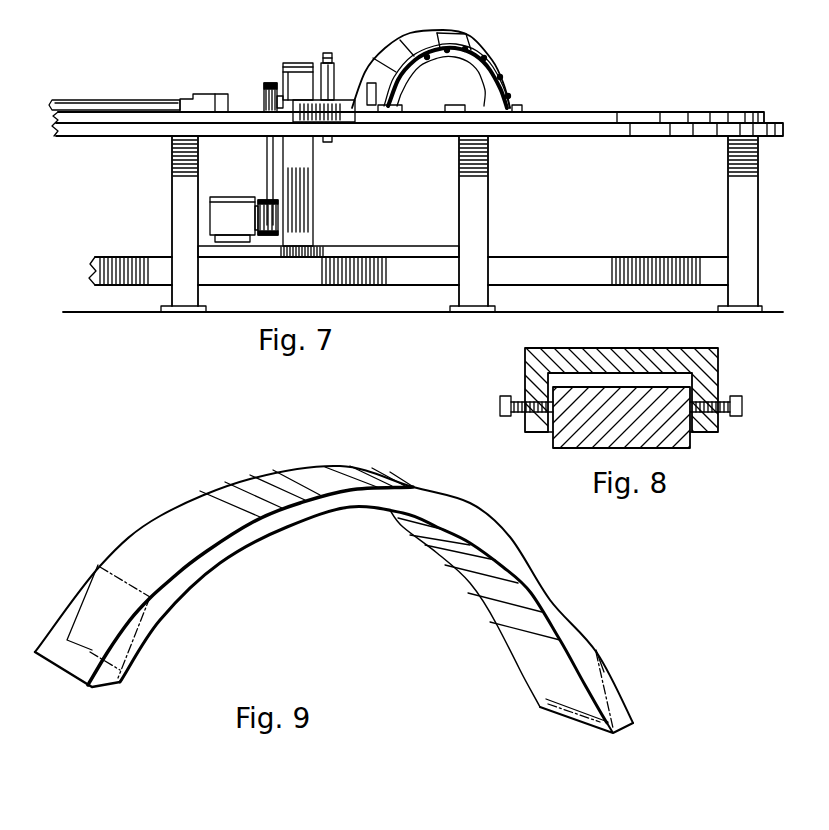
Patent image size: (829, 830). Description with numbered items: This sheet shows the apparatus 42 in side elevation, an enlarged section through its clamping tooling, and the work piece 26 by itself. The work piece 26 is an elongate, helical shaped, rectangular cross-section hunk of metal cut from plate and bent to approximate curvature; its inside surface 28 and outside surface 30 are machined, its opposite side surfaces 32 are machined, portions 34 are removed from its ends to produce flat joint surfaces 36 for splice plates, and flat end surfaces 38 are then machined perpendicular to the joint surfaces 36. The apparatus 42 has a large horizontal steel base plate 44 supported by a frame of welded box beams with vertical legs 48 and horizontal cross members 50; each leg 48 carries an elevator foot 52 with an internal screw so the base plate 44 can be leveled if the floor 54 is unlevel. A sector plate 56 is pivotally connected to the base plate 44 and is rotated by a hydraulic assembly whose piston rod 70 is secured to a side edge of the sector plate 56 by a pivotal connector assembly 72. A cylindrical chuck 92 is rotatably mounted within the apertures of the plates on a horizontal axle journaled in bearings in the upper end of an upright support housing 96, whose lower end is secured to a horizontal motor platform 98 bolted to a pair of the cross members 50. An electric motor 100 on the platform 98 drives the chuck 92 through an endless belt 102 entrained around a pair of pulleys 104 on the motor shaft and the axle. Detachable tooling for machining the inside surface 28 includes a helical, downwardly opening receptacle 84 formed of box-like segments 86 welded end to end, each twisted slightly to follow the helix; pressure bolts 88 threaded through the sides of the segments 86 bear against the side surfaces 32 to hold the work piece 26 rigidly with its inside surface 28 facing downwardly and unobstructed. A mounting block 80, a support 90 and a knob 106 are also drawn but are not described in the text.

In FIG. 7, the work piece 26 is at (460, 60).
In FIG. 8, the work piece 26 is at (610, 397).
In FIG. 9, the work piece 26 is at (161, 523).
In FIG. 7, the inside surface 28 is at (488, 95).
In FIG. 8, the inside surface 28 is at (577, 448).
In FIG. 9, the inside surface 28 is at (475, 573).
In FIG. 9, the outside surface 30 is at (275, 478).
In FIG. 8, the side surfaces 32 is at (548, 437).
In FIG. 9, the side surfaces 32 is at (513, 550).
In FIG. 9, the portions 34 is at (70, 673).
In FIG. 9, the joint surfaces 36 is at (80, 610).
In FIG. 9, the end surfaces 38 is at (120, 674).
In FIG. 7, the apparatus 42 is at (699, 108).
In FIG. 7, the base plate 44 is at (687, 132).
In FIG. 7, the legs 48 is at (477, 219).
In FIG. 7, the cross members 50 is at (337, 275).
In FIG. 7, the elevator foot 52 is at (182, 305).
In FIG. 7, the floor 54 is at (557, 313).
In FIG. 7, the sector plate 56 is at (623, 117).
In FIG. 7, the piston rod 70 is at (117, 102).
In FIG. 7, the pivotal connector assembly 72 is at (207, 92).
In FIG. 7, the mounting block 80 is at (333, 118).
In FIG. 7, the receptacle 84 is at (481, 40).
In FIG. 7, the box-like segments 86 is at (426, 35).
In FIG. 8, the box-like segments 86 is at (523, 357).
In FIG. 7, the pressure bolts 88 is at (503, 78).
In FIG. 8, the pressure bolts 88 is at (500, 402).
In FIG. 7, the support 90 is at (392, 107).
In FIG. 7, the chuck 92 is at (333, 63).
In FIG. 7, the support housing 96 is at (285, 65).
In FIG. 7, the motor platform 98 is at (383, 245).
In FIG. 7, the electric motor 100 is at (222, 218).
In FIG. 7, the endless belt 102 is at (267, 152).
In FIG. 7, the pulleys 104 is at (263, 92).
In FIG. 7, the knob 106 is at (320, 48).